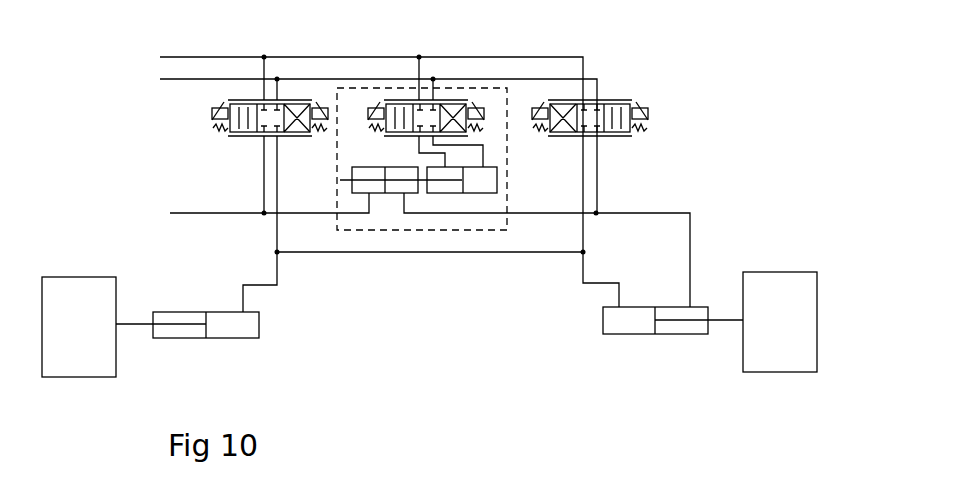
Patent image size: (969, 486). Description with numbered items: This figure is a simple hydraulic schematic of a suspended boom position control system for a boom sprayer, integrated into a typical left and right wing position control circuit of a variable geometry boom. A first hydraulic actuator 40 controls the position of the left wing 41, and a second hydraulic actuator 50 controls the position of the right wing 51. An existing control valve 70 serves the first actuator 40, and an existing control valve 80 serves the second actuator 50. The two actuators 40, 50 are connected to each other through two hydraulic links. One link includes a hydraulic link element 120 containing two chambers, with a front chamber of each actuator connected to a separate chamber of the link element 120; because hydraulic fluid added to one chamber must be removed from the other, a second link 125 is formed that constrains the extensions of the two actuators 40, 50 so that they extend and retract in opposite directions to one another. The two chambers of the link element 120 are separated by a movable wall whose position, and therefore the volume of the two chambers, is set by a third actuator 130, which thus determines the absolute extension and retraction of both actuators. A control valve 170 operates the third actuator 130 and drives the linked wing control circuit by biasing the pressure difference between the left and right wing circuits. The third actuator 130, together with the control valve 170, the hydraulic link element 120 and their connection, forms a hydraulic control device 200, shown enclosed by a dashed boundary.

The first hydraulic actuator 40 is at (223, 341).
The left wing 41 is at (79, 327).
The second hydraulic actuator 50 is at (650, 337).
The right wing 51 is at (780, 322).
The control valve 70 is at (231, 145).
The control valve 80 is at (623, 138).
The hydraulic link element 120 is at (367, 167).
The second hydraulic link 125 is at (436, 253).
The third actuator 130 is at (497, 188).
The control valve 170 is at (448, 98).
The hydraulic control device 200 is at (337, 155).